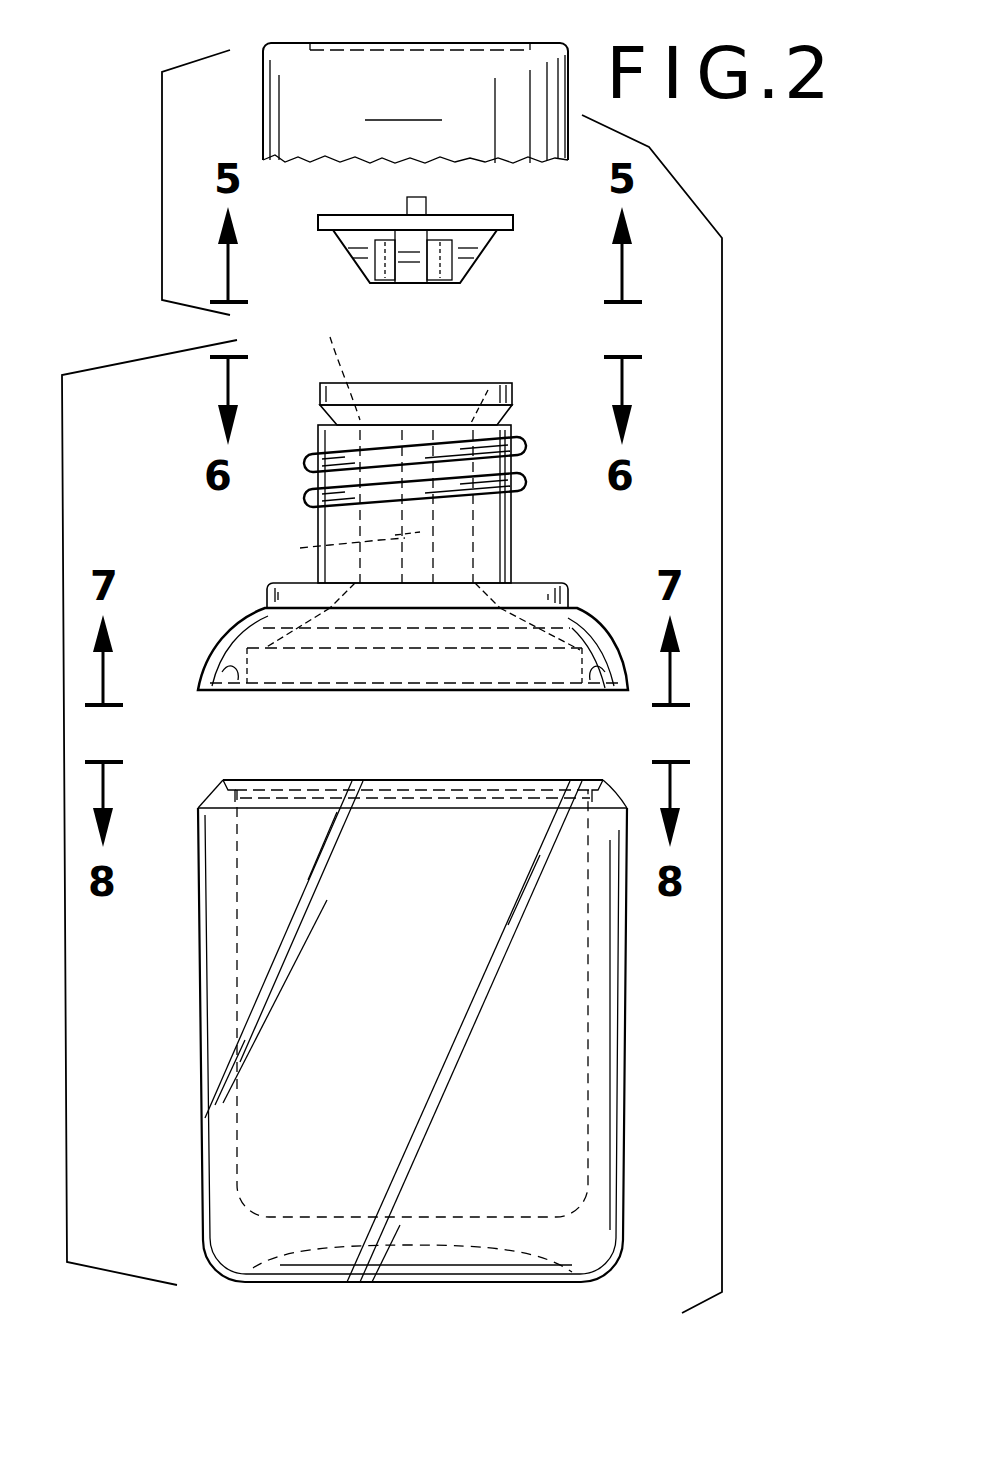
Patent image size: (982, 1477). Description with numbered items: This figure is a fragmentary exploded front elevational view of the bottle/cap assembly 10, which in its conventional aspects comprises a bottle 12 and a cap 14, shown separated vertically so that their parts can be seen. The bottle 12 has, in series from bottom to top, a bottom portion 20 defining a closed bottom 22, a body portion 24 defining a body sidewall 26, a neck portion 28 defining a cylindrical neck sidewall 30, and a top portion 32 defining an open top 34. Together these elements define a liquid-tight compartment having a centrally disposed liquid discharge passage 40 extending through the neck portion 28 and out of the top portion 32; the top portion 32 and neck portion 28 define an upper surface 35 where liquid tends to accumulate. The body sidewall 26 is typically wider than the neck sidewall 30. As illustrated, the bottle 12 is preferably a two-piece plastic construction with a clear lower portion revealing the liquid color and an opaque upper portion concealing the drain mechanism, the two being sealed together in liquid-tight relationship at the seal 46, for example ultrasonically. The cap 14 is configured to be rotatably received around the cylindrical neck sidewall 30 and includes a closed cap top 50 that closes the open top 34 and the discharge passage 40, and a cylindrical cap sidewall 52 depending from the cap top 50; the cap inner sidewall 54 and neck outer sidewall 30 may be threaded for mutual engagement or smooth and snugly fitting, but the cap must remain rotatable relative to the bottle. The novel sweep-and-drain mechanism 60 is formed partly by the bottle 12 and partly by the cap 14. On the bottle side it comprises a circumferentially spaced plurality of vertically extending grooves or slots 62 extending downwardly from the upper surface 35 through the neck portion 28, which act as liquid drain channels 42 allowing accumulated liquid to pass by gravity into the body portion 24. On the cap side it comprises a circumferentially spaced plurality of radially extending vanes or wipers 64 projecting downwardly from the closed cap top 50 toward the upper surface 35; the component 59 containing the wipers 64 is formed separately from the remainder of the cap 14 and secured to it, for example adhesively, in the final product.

The bottle/cap assembly 10 is at (727, 357).
The bottle 12 is at (58, 370).
The cap 14 is at (155, 210).
The bottom portion 20 is at (365, 1064).
The closed bottom 22 is at (306, 1284).
The body portion 24 is at (198, 995).
The body sidewall 26 is at (300, 1114).
The neck portion 28 is at (318, 566).
The cylindrical neck sidewall 30 is at (392, 444).
The top portion 32 is at (510, 388).
The open top 34 is at (460, 383).
The upper surface 35 is at (332, 363).
The liquid discharge passage 40 is at (410, 540).
The liquid drain channels 42 is at (370, 560).
The seal 46 is at (393, 693).
The closed cap top 50 is at (375, 82).
The cylindrical cap sidewall 52 is at (403, 102).
The cap inner sidewall 54 is at (266, 110).
The component containing vanes or wipers 59 is at (438, 271).
The sweep-and-drain mechanism 60 is at (318, 532).
The vertically extending grooves or slots 62 is at (407, 533).
The vanes or wipers 64 is at (442, 288).